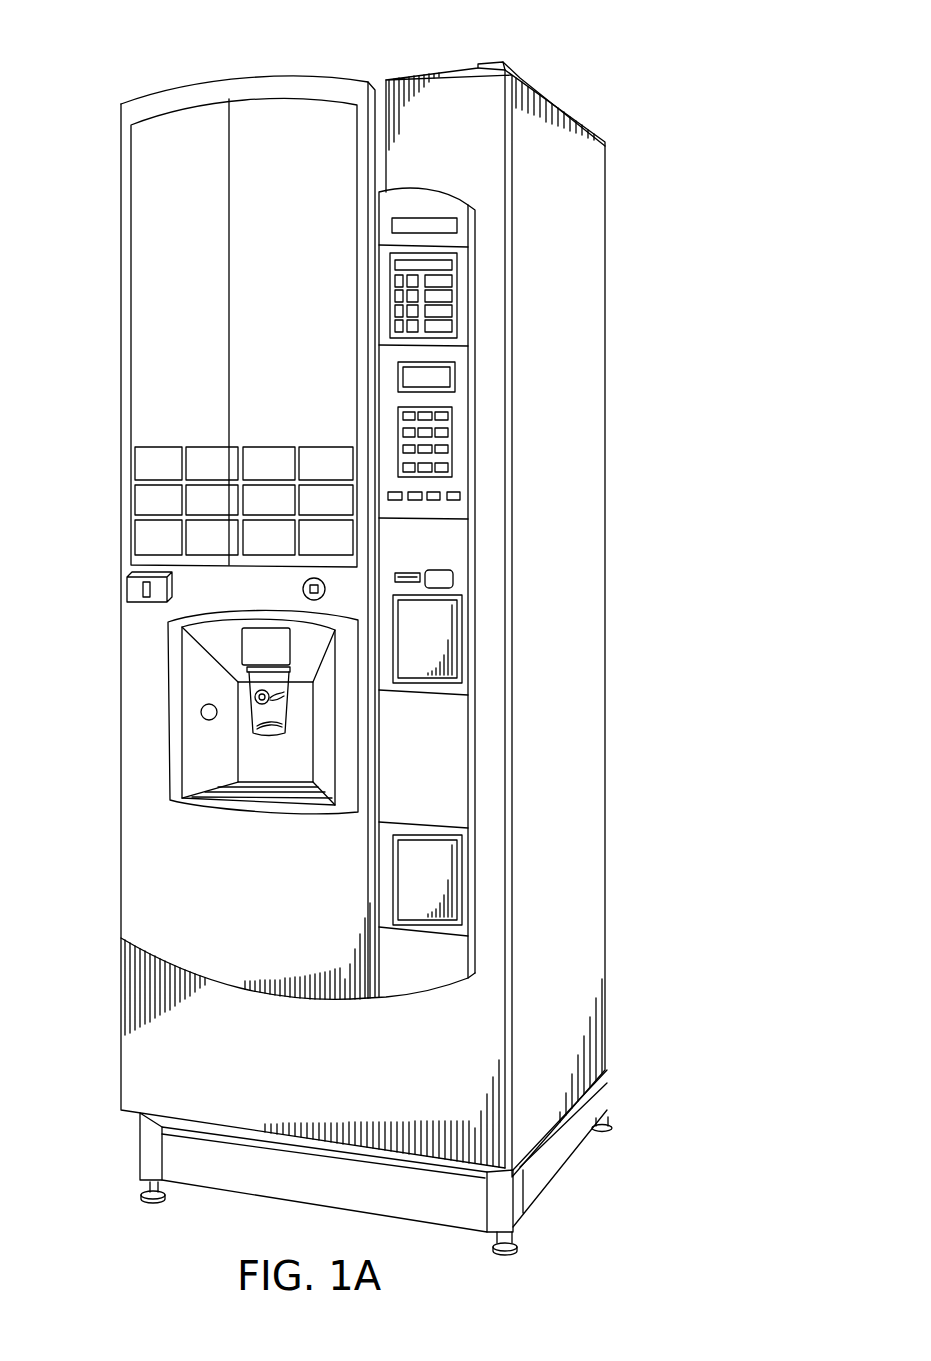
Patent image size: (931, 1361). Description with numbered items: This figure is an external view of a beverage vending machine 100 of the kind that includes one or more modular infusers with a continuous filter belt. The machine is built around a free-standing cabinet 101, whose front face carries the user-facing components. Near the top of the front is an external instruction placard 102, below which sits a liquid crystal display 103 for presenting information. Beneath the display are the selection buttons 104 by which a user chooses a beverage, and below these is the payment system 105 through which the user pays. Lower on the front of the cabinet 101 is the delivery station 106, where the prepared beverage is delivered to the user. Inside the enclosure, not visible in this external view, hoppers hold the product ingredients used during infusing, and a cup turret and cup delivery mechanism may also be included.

The vending machine 100 is at (598, 83).
The free-standing cabinet 101 is at (130, 113).
The external instruction placard 102 is at (458, 295).
The liquid crystal display (LCD) 103 is at (455, 377).
The selection buttons 104 is at (453, 445).
The payment system 105 is at (440, 575).
The delivery station 106 is at (285, 710).